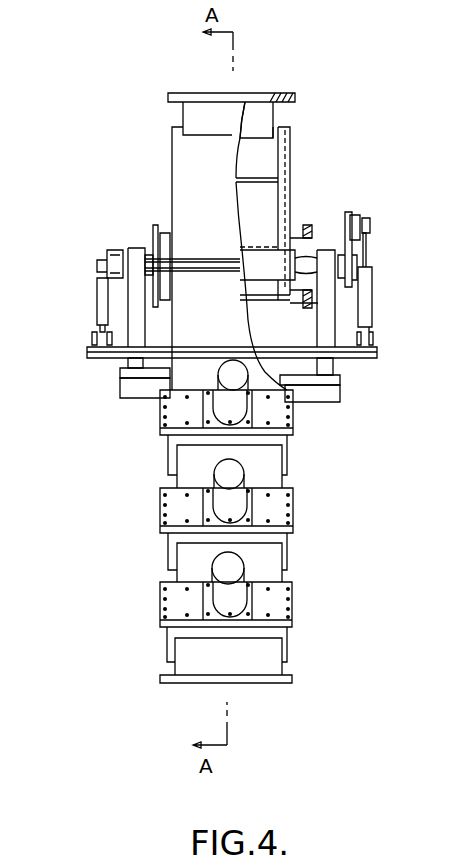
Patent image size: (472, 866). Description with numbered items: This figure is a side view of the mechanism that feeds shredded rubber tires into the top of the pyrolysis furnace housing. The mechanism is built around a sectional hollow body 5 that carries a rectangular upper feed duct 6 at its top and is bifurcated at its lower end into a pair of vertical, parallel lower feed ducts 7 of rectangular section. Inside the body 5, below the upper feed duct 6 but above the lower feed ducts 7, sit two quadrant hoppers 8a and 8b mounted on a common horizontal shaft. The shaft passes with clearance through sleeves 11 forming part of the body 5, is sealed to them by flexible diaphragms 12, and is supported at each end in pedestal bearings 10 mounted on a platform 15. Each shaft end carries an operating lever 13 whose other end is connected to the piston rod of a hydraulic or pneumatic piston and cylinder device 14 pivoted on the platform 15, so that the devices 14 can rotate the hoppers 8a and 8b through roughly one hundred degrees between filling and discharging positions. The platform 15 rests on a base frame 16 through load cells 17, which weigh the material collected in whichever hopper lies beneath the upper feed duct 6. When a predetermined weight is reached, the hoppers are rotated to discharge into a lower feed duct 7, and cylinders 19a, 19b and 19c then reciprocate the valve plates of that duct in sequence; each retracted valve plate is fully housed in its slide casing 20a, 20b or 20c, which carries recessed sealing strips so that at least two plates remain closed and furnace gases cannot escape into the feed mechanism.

The sectional hollow body 5 is at (290, 137).
The upper feed duct 6 is at (272, 117).
The lower feed duct 7 is at (252, 652).
The quadrant hopper 8a is at (255, 200).
The quadrant hopper 8b is at (257, 178).
The pedestal bearing 10 is at (323, 308).
The sleeve 11 is at (165, 232).
The flexible diaphragm 12 is at (315, 232).
The operating lever 13 is at (122, 248).
The piston and cylinder device 14 is at (103, 300).
The platform 15 is at (92, 353).
The base frame 16 is at (330, 390).
The load cell 17 is at (128, 370).
The hydraulic or pneumatic cylinder 19a is at (230, 398).
The hydraulic or pneumatic cylinder 19b is at (233, 506).
The hydraulic or pneumatic cylinder 19c is at (233, 595).
The slide casing 20a is at (277, 442).
The slide casing 20b is at (265, 540).
The slide casing 20c is at (265, 633).